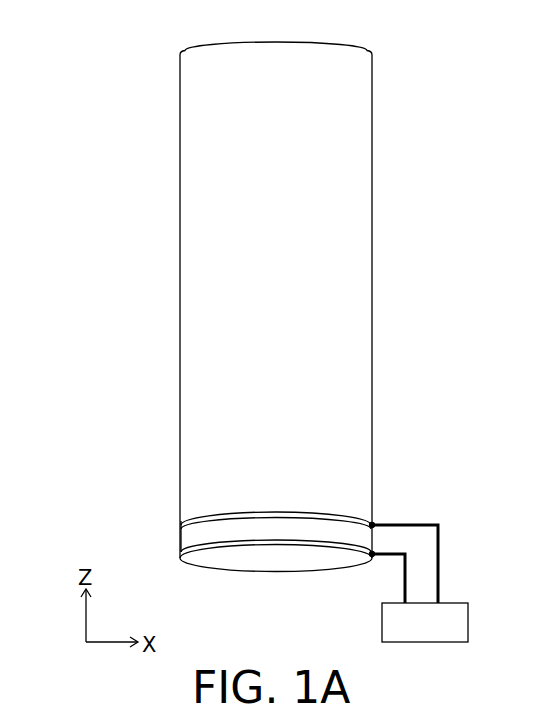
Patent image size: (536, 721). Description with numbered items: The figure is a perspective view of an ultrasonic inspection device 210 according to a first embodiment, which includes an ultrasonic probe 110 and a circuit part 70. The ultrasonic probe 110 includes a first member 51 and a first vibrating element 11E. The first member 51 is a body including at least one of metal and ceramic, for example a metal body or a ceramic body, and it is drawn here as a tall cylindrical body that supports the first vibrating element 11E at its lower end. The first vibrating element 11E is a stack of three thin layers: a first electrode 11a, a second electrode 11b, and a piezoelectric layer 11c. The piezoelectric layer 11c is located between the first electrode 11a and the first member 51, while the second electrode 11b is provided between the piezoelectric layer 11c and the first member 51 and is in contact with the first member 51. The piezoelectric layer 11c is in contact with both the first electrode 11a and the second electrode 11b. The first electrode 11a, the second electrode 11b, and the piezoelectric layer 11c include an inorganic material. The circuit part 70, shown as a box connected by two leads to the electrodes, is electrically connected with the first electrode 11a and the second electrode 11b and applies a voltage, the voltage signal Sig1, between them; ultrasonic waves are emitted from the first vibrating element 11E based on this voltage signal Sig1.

The ultrasonic probe 110 is at (250, 287).
The first member 51 is at (202, 300).
The first vibrating element 11E is at (207, 531).
The second electrode 11b is at (182, 520).
The piezoelectric layer 11c is at (183, 538).
The first electrode 11a is at (182, 551).
The ultrasonic inspection device 210 is at (442, 525).
The voltage signal Sig1 is at (438, 558).
The circuit part 70 is at (382, 616).